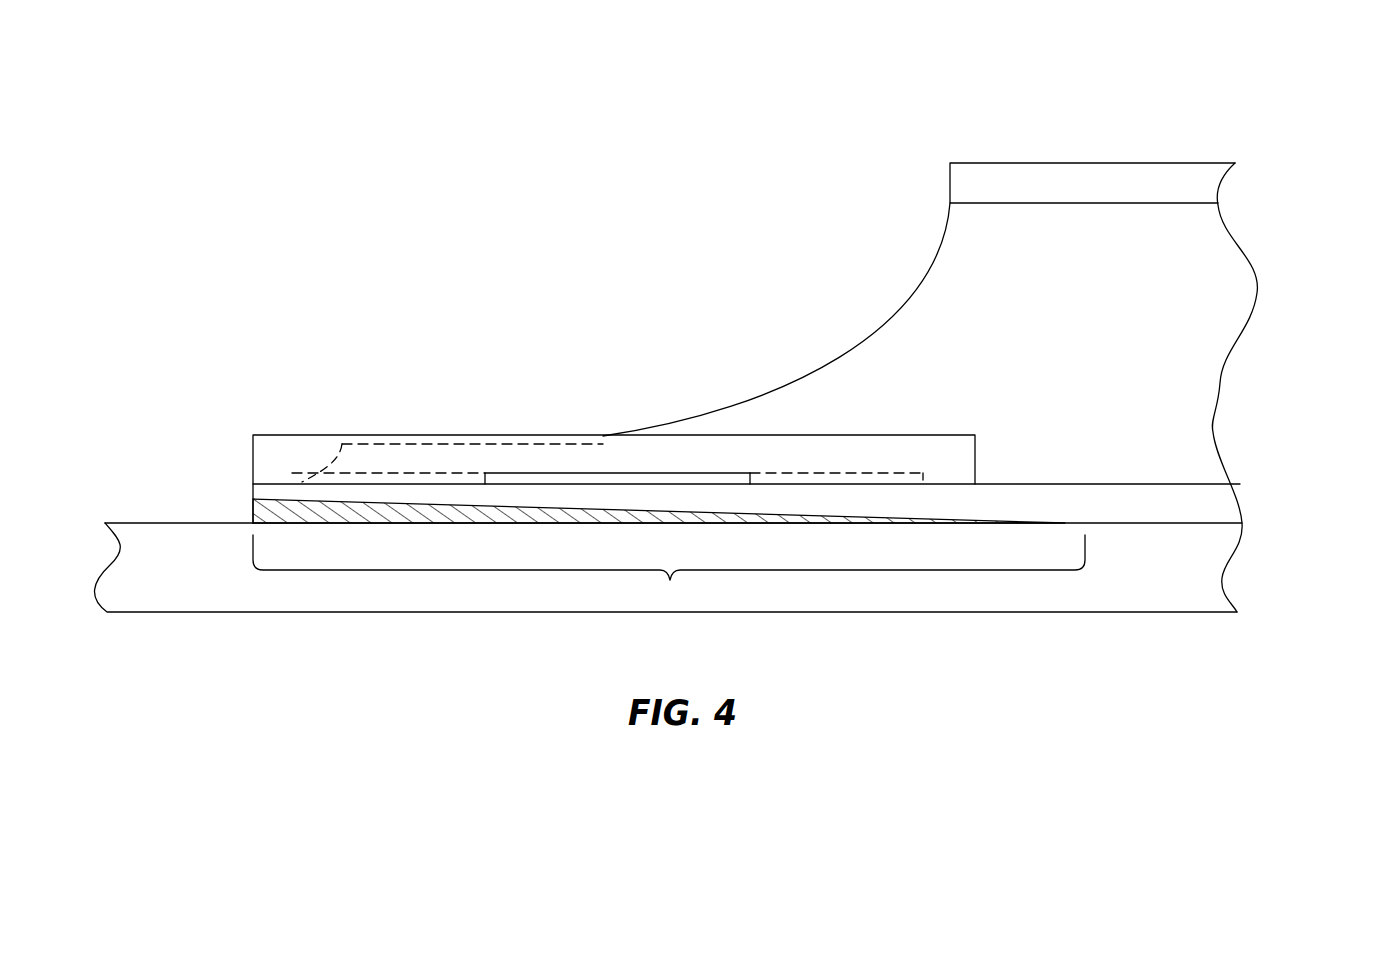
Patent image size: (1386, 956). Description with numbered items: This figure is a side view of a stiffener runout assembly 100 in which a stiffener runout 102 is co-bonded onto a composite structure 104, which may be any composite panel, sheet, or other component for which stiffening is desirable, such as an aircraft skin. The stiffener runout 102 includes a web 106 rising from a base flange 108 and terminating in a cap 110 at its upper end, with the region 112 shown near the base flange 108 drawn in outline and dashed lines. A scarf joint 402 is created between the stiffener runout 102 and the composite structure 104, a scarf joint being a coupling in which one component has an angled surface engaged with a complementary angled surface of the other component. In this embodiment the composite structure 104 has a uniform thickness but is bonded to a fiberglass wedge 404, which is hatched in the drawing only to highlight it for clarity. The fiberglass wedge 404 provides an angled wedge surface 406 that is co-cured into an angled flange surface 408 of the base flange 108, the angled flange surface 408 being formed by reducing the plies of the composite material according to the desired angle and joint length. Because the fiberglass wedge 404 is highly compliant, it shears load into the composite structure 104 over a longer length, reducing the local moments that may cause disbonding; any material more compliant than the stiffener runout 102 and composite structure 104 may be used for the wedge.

The stiffener runout assembly 100 is at (224, 98).
The stiffener runout 102 is at (1260, 408).
The composite structure 104 is at (1256, 560).
The web 106 is at (1232, 330).
The base flange 108 is at (1222, 512).
The cap 110 is at (1180, 180).
The read/write element region 112 is at (943, 450).
The scarf joint 402 is at (669, 573).
The fiberglass wedge 404 is at (263, 515).
The angled wedge surface 406 is at (640, 505).
The angled flange surface 408 is at (777, 521).